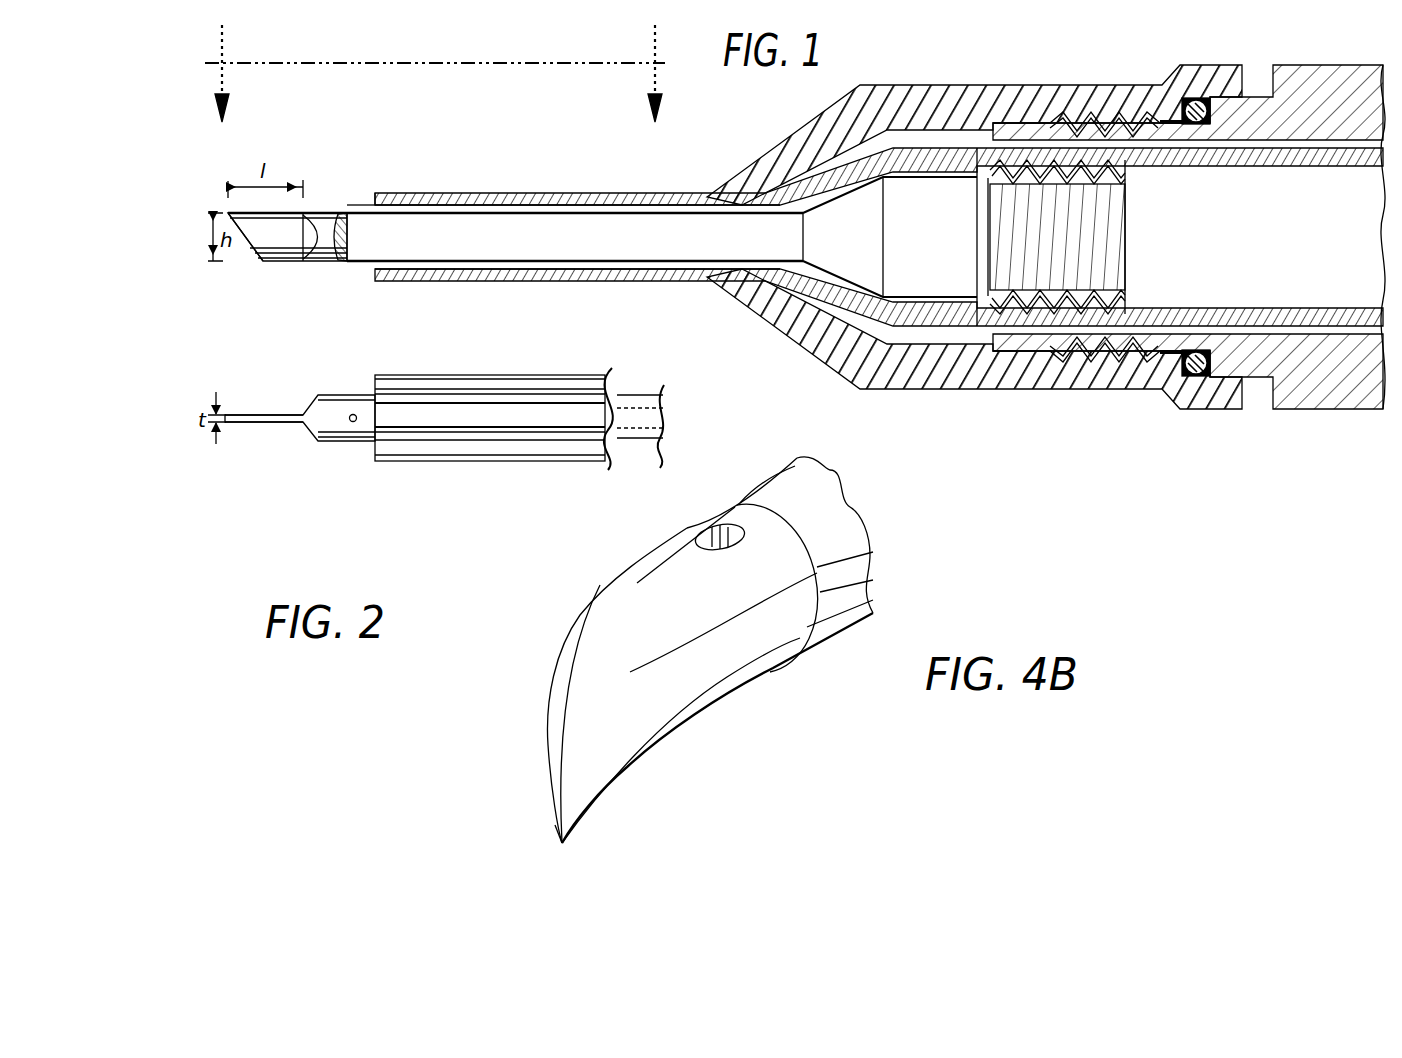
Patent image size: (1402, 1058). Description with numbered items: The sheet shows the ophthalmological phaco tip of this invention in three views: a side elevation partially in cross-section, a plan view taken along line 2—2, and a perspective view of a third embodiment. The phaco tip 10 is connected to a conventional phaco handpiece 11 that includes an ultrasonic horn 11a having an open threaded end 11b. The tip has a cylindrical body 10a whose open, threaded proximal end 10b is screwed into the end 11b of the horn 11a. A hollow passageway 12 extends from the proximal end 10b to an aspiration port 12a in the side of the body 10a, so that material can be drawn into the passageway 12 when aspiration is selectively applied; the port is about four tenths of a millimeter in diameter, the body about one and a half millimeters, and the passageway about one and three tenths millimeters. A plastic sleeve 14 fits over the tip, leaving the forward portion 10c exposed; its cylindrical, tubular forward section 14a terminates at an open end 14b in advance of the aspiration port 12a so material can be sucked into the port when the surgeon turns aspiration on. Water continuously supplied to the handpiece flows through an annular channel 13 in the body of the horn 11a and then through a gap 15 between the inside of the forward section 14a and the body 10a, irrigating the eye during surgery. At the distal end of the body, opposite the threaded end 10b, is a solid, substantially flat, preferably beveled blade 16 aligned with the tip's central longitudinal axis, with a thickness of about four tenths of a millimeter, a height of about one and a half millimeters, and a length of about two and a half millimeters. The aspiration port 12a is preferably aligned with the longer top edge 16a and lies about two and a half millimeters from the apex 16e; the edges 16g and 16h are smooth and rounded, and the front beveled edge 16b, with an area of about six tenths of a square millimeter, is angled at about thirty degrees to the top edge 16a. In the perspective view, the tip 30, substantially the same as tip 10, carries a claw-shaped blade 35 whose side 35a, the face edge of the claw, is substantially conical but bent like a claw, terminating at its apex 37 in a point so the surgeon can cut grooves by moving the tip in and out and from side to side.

In FIG. 1, the section line 2— 2 is at (435, 91).
In FIG. 1, the phaco tip 10 is at (343, 262).
In FIG. 2, the phaco tip 10 is at (348, 468).
In FIG. 1, the cylindrical body 10a is at (583, 215).
In FIG. 2, the cylindrical body 10a is at (640, 394).
In FIG. 1, the threaded proximal end 10b is at (1125, 210).
In FIG. 2, the threaded proximal end 10b is at (360, 442).
In FIG. 2, the forward portion 10c is at (352, 400).
In FIG. 1, the phaco handpiece 11 is at (1272, 418).
In FIG. 1, the ultrasonic horn 11a is at (1005, 350).
In FIG. 1, the open threaded end 11b is at (1030, 160).
In FIG. 1, the hollow passageway 12 is at (567, 264).
In FIG. 1, the aspiration port 12a is at (350, 212).
In FIG. 2, the aspiration port 12a is at (349, 420).
In FIG. 4B, the aspiration port 12a is at (720, 525).
In FIG. 1, the annular channel 13 is at (1113, 145).
In FIG. 1, the plastic sleeve 14 is at (760, 165).
In FIG. 2, the plastic sleeve 14 is at (563, 382).
In FIG. 4B, the plastic sleeve 14 is at (820, 500).
In FIG. 1, the tubular forward section 14a is at (425, 283).
In FIG. 1, the open end 14b is at (375, 193).
In FIG. 1, the gap 15 is at (540, 193).
In FIG. 1, the blade 16 is at (300, 262).
In FIG. 2, the top edge 16a is at (246, 415).
In FIG. 1, the front beveled edge 16b is at (243, 240).
In FIG. 2, the front beveled edge 16b is at (228, 423).
In FIG. 1, the apex 16e is at (230, 212).
In FIG. 1, the edge 16g is at (306, 212).
In FIG. 1, the edge 16h is at (283, 262).
In FIG. 4B, the tip 30 is at (716, 730).
In FIG. 4B, the claw blade 35 is at (568, 725).
In FIG. 4B, the side 35a is at (628, 748).
In FIG. 4B, the apex 37 is at (563, 810).